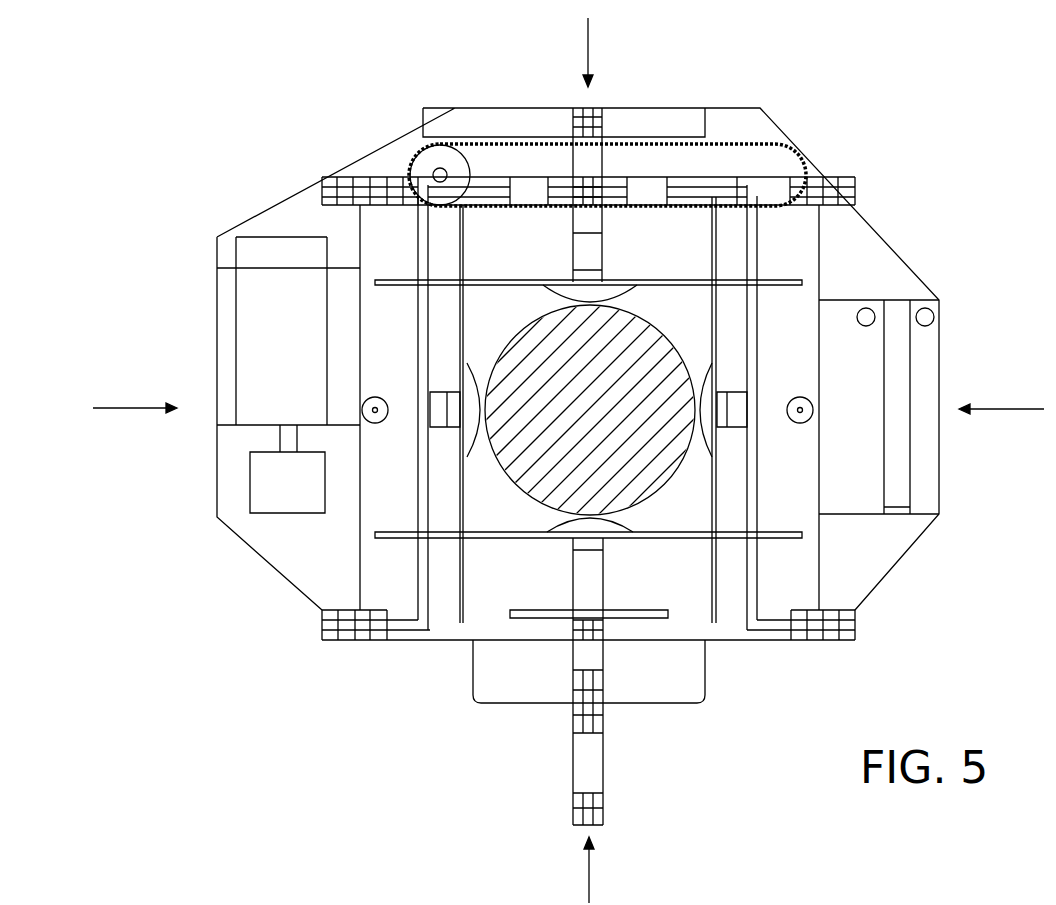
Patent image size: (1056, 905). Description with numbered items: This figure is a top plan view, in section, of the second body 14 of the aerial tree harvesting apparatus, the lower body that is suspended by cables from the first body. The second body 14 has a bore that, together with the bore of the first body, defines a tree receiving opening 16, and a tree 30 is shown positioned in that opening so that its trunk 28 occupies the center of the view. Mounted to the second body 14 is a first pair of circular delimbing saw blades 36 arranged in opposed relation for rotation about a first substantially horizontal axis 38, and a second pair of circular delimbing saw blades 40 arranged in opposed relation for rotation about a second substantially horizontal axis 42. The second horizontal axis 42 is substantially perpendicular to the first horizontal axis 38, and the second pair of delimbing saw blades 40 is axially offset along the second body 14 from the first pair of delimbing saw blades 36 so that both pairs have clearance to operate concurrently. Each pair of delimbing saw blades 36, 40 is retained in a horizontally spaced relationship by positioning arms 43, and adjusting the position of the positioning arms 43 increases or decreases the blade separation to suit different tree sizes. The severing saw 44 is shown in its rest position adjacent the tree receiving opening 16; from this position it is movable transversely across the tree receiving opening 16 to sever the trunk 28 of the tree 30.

The second body 14 is at (163, 233).
The tree receiving opening 16 is at (683, 307).
The trunk 28 is at (573, 423).
The tree 30 is at (532, 338).
The first pair of circular delimbing saw blades 36 is at (530, 282).
The first substantially horizontal axis 38 is at (588, 52).
The second pair of circular delimbing saw blades 40 is at (461, 346).
The second substantially horizontal axis 42 is at (143, 407).
The positioning arms 43 is at (595, 255).
The severing saw 44 is at (765, 150).